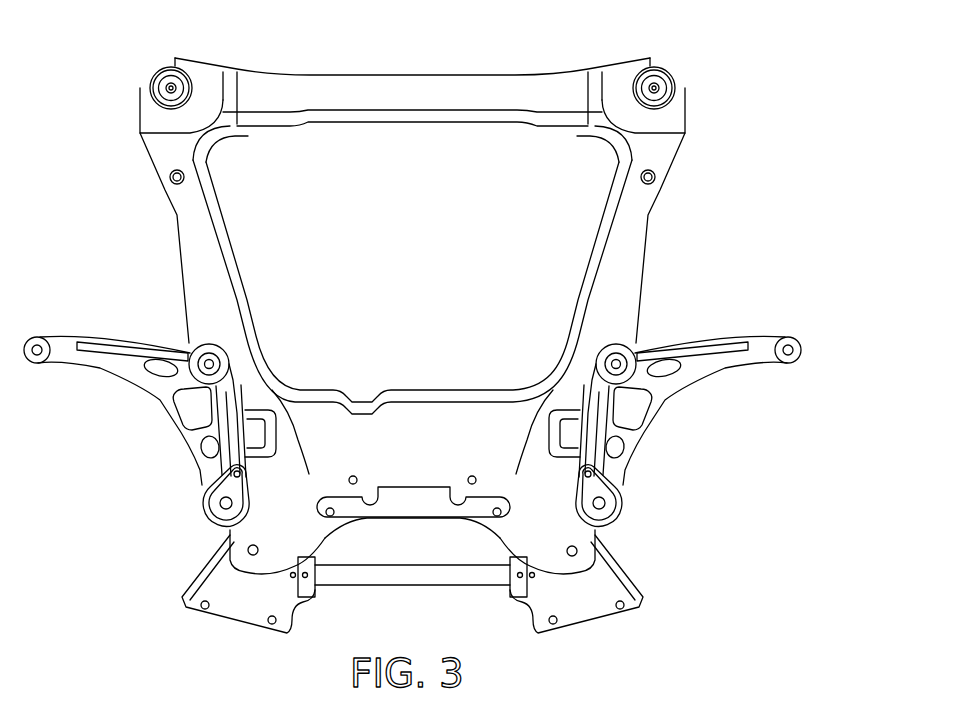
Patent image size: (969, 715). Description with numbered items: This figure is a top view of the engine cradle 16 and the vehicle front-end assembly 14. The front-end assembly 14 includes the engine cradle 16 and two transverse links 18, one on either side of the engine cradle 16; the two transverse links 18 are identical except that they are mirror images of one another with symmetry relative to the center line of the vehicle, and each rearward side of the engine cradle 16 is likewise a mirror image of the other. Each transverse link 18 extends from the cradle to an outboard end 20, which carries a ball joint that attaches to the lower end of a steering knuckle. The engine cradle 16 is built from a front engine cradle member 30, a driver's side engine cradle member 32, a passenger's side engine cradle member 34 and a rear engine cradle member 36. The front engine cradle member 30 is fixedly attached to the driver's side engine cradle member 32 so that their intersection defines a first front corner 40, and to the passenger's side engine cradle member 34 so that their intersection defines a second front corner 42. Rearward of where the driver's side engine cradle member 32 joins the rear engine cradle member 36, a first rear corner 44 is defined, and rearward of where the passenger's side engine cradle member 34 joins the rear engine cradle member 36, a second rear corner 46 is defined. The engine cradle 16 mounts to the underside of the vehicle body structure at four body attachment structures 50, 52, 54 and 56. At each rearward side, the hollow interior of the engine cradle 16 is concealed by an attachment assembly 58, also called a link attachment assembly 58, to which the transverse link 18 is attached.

The vehicle front-end assembly 14 is at (597, 30).
The engine cradle 16 is at (488, 73).
The transverse link 18 is at (160, 392).
The outboard end 20 is at (33, 340).
The front engine cradle member 30 is at (350, 90).
The driver's side engine cradle member 32 is at (197, 255).
The passenger's side engine cradle member 34 is at (627, 253).
The rear engine cradle member 36 is at (422, 443).
The first front corner 40 is at (195, 113).
The second front corner 42 is at (630, 115).
The first rear corner 44 is at (231, 565).
The second rear corner 46 is at (594, 565).
The body attachment structure 50 is at (165, 82).
The body attachment structure 52 is at (658, 82).
The body attachment structure 54 is at (257, 548).
The body attachment structure 56 is at (568, 548).
The attachment assembly 58 is at (227, 373).